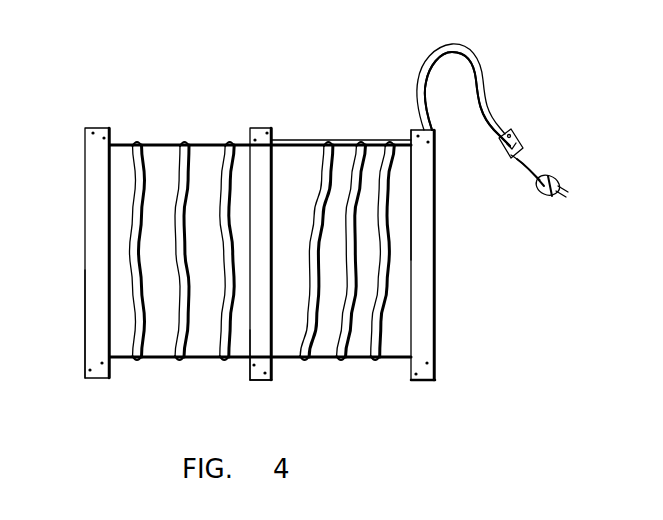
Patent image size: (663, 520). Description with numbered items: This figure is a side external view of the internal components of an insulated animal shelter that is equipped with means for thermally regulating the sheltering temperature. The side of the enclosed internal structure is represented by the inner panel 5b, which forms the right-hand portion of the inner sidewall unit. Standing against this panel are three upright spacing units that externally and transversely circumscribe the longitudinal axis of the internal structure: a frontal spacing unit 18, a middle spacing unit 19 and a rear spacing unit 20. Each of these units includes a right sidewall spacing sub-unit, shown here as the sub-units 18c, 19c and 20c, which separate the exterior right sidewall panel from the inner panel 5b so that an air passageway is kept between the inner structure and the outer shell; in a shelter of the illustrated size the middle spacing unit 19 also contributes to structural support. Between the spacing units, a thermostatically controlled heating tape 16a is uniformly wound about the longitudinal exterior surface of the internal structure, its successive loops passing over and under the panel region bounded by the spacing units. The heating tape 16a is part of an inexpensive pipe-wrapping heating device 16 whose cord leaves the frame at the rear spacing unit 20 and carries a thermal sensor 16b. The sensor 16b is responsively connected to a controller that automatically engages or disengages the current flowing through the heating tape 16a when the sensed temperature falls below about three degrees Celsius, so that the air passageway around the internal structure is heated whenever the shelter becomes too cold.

The inner panel 5b is at (307, 165).
The heating device 16 is at (477, 60).
The heating tape 16a is at (220, 142).
The thermal sensor 16b is at (520, 137).
The frontal spacing unit 18 is at (95, 253).
The right sidewall spacing sub-unit 18c is at (97, 306).
The middle spacing unit 19 is at (260, 127).
The right sidewall spacing sub-unit 19c is at (250, 372).
The rear spacing unit 20 is at (433, 367).
The right sidewall spacing sub-unit 20c is at (430, 240).